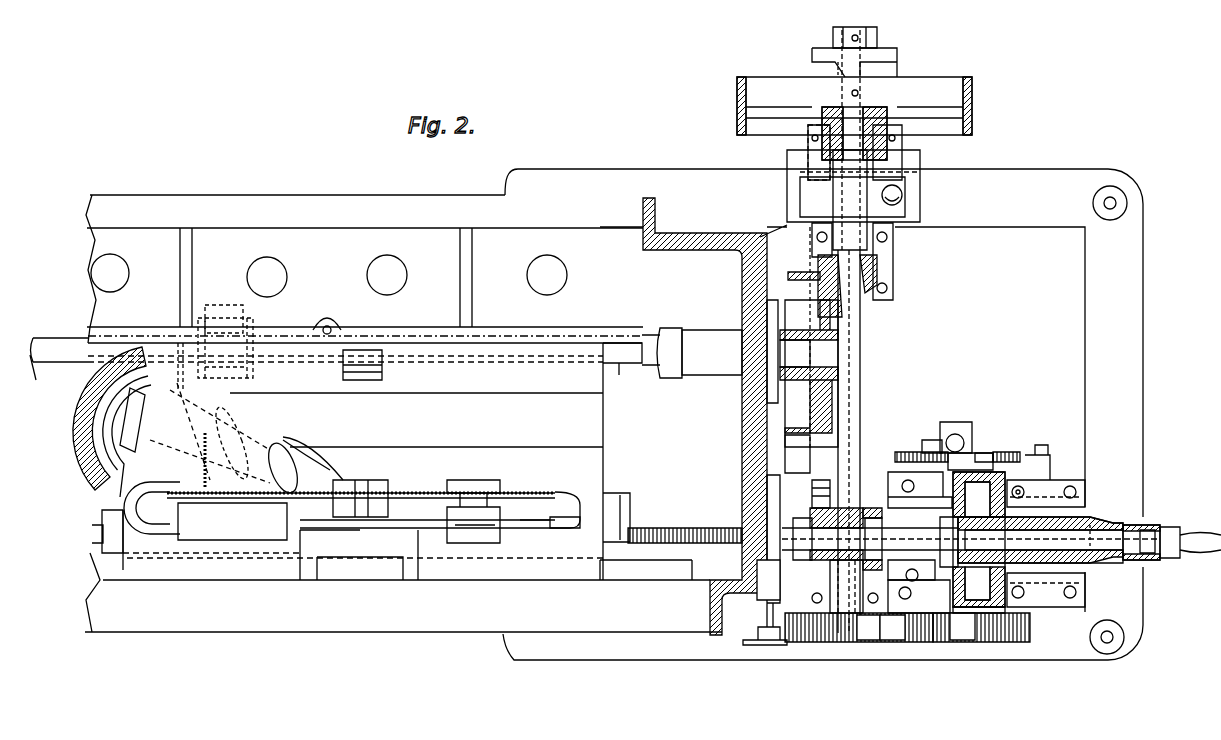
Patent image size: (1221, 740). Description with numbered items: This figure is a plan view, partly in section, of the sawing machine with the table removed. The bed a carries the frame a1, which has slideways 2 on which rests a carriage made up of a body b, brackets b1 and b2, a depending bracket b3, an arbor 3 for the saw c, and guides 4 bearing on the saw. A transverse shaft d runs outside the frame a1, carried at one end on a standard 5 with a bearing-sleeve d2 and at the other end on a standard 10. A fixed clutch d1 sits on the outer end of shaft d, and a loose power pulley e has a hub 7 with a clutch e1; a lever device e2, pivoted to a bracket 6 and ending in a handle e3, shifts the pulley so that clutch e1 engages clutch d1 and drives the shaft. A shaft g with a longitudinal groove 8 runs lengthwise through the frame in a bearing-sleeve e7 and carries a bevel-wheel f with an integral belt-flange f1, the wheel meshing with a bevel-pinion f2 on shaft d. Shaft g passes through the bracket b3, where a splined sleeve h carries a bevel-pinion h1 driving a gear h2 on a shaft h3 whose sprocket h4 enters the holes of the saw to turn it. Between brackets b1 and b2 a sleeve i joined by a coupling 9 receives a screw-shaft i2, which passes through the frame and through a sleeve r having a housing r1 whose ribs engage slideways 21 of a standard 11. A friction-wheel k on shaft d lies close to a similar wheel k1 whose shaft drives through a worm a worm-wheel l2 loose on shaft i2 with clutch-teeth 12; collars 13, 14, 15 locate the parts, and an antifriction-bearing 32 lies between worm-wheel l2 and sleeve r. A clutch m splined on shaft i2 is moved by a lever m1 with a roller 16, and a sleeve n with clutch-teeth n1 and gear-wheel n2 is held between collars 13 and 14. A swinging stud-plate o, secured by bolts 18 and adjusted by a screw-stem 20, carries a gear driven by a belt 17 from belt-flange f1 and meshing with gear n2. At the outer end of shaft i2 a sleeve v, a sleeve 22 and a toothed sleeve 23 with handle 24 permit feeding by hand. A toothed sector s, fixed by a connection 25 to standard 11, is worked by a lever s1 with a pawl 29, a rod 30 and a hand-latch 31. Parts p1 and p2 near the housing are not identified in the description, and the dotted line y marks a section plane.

The bed a is at (823, 415).
The frame a1 is at (742, 286).
The carriage body b is at (345, 461).
The carriage bracket b1 is at (100, 515).
The carriage bracket b2 is at (620, 486).
The depending bracket b3 is at (222, 305).
The saw c is at (420, 492).
The shaft d is at (850, 370).
The fixed clutch d1 is at (882, 48).
The bearing-sleeve d2 is at (840, 203).
The pulley e is at (972, 98).
The clutch e1 is at (882, 93).
The lever device e2 is at (805, 160).
The handle e3 is at (903, 157).
The bearing-sleeve e7 is at (705, 348).
The bevel-wheel f is at (832, 430).
The belt-flange f1 is at (800, 283).
The bevel-pinion f2 is at (880, 283).
The shaft g is at (66, 338).
The sleeve h is at (228, 333).
The bevel-pinion h1 is at (178, 327).
The gear h2 is at (78, 432).
The shaft h3 is at (190, 432).
The sprocket h4 is at (252, 430).
The sleeve i is at (520, 522).
The screw-shaft i2 is at (851, 570).
The friction-wheel k is at (858, 642).
The friction-wheel k1 is at (963, 642).
The worm-wheel l2 is at (960, 640).
The clutch m is at (971, 540).
The lever m1 is at (903, 639).
The sleeve n is at (838, 525).
The clutch-teeth n1 is at (868, 508).
The gear-wheel n2 is at (813, 443).
The stud-plate o is at (765, 490).
The bearing p1 is at (1003, 470).
The bearing cap p2 is at (1085, 500).
The sleeve r is at (1080, 515).
The housing r1 is at (975, 613).
The toothed sector s is at (908, 452).
The lever s1 is at (958, 436).
The sleeve v is at (1170, 525).
The section line y is at (795, 672).
The slideways 2 is at (622, 462).
The arbor 3 is at (334, 508).
The guides 4 is at (339, 511).
The standard 5 is at (878, 250).
The bracket 6 is at (905, 202).
The hub 7 is at (893, 120).
The longitudinal groove 8 is at (38, 371).
The coupling 9 is at (565, 513).
The standard 10 is at (850, 613).
The standard 11 is at (915, 485).
The clutch-teeth 12 is at (919, 596).
The collar 13 is at (802, 539).
The collar 14 is at (873, 539).
The collar 15 is at (949, 542).
The roller 16 is at (898, 576).
The belt 17 is at (798, 450).
The bolts 18 is at (768, 580).
The screw-stem 20 is at (758, 627).
The slideways 21 is at (1055, 640).
The sleeve 22 is at (1098, 523).
The sleeve 23 is at (1165, 525).
The handle 24 is at (1195, 535).
The connection 25 is at (1042, 445).
The pawl 29 is at (975, 457).
The rod 30 is at (990, 455).
The hand-latch 31 is at (946, 442).
The antifriction-bearing 32 is at (1045, 537).